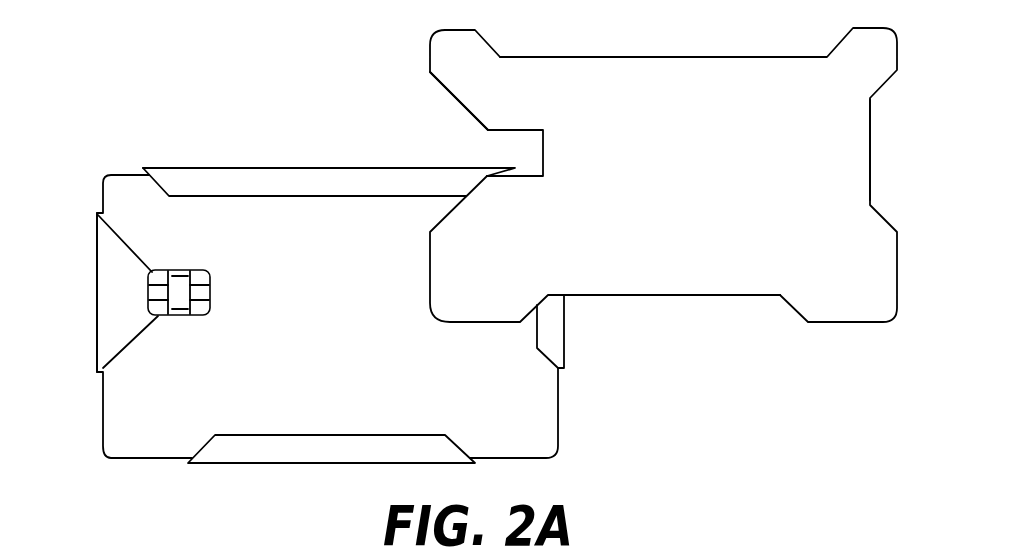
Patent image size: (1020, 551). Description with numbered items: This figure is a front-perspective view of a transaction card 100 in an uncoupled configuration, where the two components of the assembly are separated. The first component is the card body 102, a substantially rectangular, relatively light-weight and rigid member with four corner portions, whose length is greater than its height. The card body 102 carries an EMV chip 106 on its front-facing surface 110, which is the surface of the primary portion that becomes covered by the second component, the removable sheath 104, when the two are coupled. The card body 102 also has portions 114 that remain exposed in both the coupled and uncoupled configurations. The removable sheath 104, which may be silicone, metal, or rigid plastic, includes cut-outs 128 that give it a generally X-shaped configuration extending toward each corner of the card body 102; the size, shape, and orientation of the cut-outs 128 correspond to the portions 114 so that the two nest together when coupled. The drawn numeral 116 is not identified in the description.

The transaction card 100 is at (276, 73).
The card body 102 is at (124, 146).
The removable sheath 104 is at (456, 59).
The EMV chip 106 is at (197, 274).
The surface 110 is at (344, 324).
The portions 114 is at (396, 184).
The second panel 116 is at (680, 181).
The cut-outs 128 is at (461, 142).